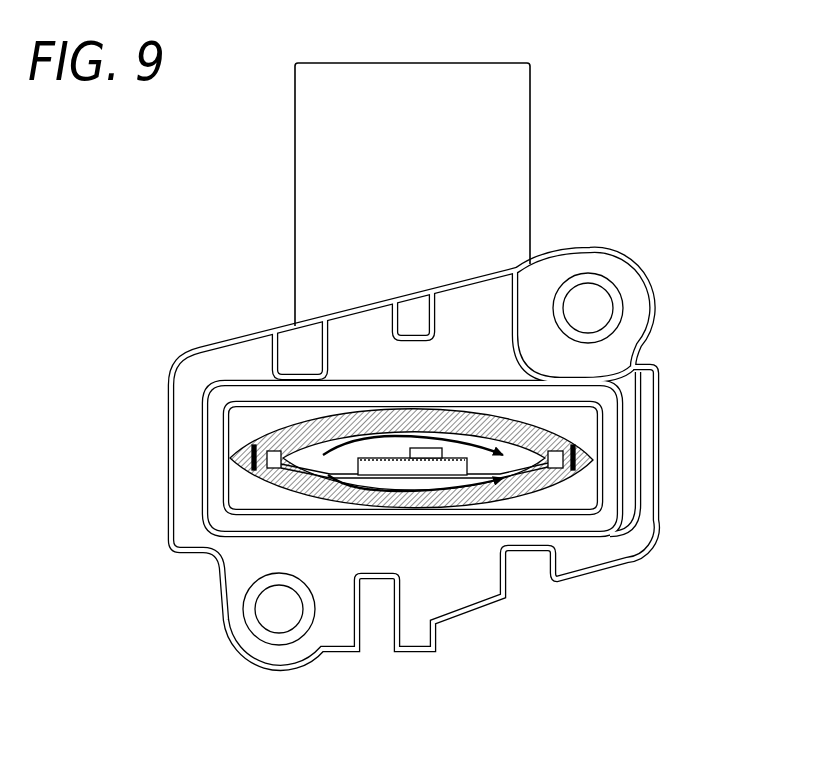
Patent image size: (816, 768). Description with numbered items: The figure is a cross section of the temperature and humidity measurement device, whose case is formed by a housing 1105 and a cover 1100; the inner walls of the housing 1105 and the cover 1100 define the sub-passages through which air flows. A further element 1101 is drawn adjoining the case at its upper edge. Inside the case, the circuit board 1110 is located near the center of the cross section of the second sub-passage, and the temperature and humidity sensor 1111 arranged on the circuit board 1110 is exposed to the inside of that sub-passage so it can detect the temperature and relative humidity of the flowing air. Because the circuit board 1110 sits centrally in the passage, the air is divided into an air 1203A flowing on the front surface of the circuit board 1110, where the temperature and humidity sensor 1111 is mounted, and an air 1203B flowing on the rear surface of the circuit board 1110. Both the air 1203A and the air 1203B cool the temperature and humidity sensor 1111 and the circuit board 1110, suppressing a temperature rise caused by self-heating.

The connector body 1101 is at (505, 183).
The cover 1100 is at (523, 456).
The housing 1105 is at (592, 458).
The circuit board 1110 is at (417, 468).
The temperature and humidity sensor 1111 is at (430, 450).
The air flowing on front surface of circuit board 1203A is at (477, 438).
The air flowing on rear surface of circuit board 1203B is at (477, 487).